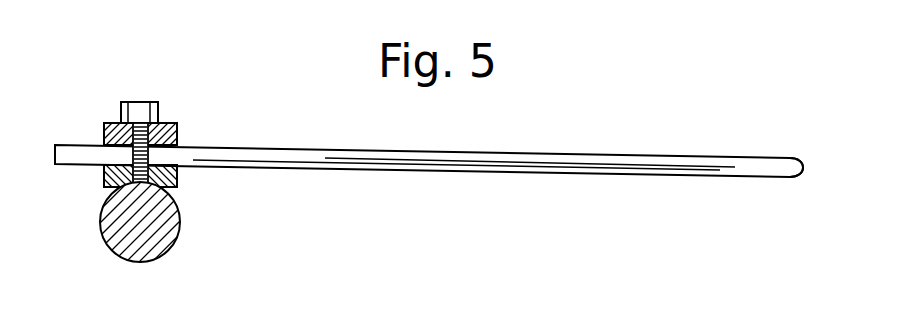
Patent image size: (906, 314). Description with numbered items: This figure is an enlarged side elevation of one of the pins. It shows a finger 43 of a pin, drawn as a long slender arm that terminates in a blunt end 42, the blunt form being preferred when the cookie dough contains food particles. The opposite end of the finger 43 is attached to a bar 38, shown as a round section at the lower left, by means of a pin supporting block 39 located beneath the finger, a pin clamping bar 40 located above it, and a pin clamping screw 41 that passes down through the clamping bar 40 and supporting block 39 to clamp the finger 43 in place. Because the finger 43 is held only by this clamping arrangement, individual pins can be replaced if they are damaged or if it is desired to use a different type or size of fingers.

The bar 38 is at (112, 238).
The pin supporting block 39 is at (177, 181).
The pin clamping bar 40 is at (177, 131).
The pin clamping screw 41 is at (133, 101).
The blunt end 42 is at (804, 167).
The finger 43 is at (505, 170).